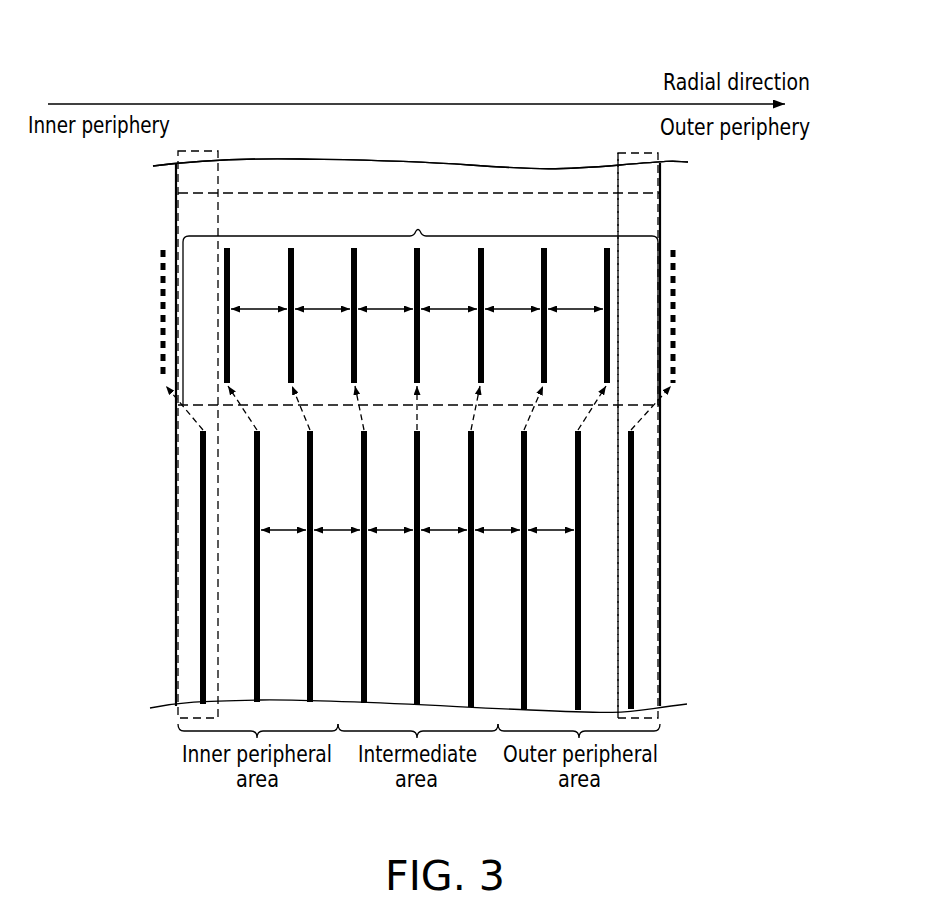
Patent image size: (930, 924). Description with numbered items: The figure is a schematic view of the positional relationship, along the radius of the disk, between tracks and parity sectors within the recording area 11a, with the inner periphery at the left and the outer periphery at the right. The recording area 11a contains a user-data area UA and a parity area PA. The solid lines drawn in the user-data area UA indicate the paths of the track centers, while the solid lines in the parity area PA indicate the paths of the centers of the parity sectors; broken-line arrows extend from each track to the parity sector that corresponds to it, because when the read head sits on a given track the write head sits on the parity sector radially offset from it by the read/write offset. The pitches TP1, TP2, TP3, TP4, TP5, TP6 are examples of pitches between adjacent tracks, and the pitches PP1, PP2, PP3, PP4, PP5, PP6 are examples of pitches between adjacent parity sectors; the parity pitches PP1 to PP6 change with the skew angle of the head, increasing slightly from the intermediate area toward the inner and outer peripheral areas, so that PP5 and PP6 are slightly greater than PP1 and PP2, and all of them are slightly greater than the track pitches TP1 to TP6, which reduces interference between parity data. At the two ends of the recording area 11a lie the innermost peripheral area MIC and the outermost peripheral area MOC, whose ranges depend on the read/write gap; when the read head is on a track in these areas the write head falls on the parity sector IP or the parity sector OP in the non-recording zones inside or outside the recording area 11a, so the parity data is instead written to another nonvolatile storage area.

The recording area 11a is at (702, 239).
The parity area PA is at (547, 190).
The parity sector (inner non-recording zone) IP is at (160, 341).
The parity sector (outer non-recording zone) OP is at (680, 291).
The user-data area UA is at (600, 573).
The innermost peripheral area MIC is at (177, 718).
The outermost peripheral area MOC is at (660, 718).
The parity sector pitch PP1 is at (385, 293).
The parity sector pitch PP2 is at (449, 293).
The parity sector pitch PP3 is at (322, 293).
The parity sector pitch PP4 is at (512, 293).
The parity sector pitch PP5 is at (259, 293).
The parity sector pitch PP6 is at (575, 293).
The track pitch TP1 is at (390, 515).
The track pitch TP2 is at (444, 515).
The track pitch TP3 is at (337, 515).
The track pitch TP4 is at (497, 515).
The track pitch TP5 is at (283, 515).
The track pitch TP6 is at (551, 515).